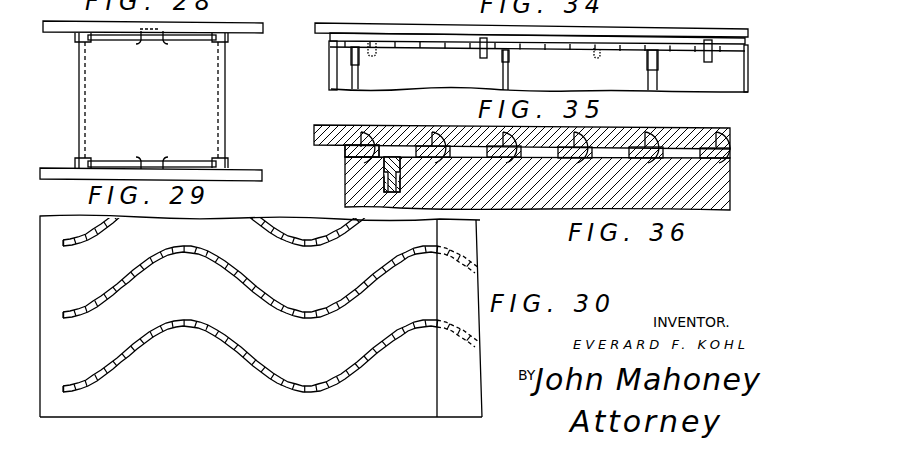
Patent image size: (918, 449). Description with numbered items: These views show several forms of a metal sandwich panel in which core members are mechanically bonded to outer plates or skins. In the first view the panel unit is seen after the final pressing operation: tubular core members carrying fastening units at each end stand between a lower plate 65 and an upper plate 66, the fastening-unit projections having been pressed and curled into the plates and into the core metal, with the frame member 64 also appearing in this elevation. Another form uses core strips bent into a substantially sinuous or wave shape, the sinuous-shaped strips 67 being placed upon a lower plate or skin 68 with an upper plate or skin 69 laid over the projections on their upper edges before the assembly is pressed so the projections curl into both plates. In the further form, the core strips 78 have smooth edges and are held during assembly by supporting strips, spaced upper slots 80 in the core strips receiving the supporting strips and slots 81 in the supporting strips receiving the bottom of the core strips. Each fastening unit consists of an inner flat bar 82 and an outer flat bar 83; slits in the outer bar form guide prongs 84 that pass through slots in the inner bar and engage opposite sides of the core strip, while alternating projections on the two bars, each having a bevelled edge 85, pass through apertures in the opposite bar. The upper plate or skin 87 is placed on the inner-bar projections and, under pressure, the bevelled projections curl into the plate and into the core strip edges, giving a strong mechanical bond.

In FIG. 29, the frame upright 64 is at (226, 83).
In FIG. 29, the lower plate 65 is at (74, 170).
In FIG. 29, the upper plate 66 is at (72, 20).
In FIG. 30, the sinuous-shaped strips 67 is at (262, 297).
In FIG. 30, the lower plate or skin 68 is at (40, 273).
In FIG. 30, the upper plate or skin 69 is at (462, 234).
In FIG. 35, the core strips 78 is at (338, 66).
In FIG. 36, the core strips 78 is at (345, 180).
In FIG. 35, the upper slots 80 is at (509, 58).
In FIG. 36, the slots 81 is at (345, 203).
In FIG. 35, the inner flat bar 82 is at (424, 48).
In FIG. 36, the inner flat bar 82 is at (345, 155).
In FIG. 35, the outer flat bar 83 is at (388, 33).
In FIG. 36, the outer flat bar 83 is at (345, 148).
In FIG. 35, the guide prongs 84 is at (477, 51).
In FIG. 36, the bevelled edge 85 is at (660, 140).
In FIG. 35, the upper plate or skin 87 is at (348, 22).
In FIG. 36, the upper plate or skin 87 is at (336, 125).